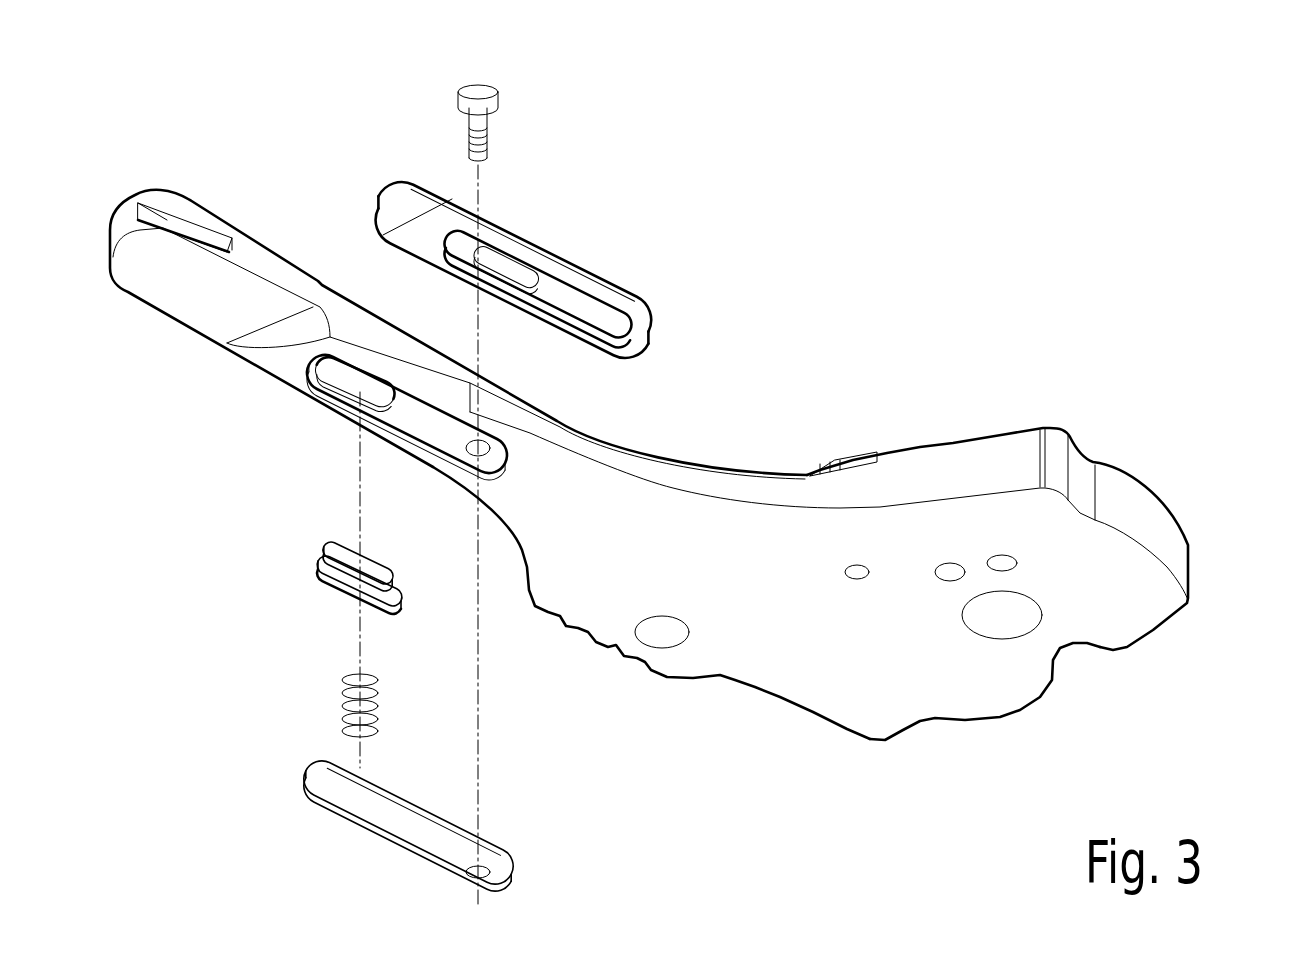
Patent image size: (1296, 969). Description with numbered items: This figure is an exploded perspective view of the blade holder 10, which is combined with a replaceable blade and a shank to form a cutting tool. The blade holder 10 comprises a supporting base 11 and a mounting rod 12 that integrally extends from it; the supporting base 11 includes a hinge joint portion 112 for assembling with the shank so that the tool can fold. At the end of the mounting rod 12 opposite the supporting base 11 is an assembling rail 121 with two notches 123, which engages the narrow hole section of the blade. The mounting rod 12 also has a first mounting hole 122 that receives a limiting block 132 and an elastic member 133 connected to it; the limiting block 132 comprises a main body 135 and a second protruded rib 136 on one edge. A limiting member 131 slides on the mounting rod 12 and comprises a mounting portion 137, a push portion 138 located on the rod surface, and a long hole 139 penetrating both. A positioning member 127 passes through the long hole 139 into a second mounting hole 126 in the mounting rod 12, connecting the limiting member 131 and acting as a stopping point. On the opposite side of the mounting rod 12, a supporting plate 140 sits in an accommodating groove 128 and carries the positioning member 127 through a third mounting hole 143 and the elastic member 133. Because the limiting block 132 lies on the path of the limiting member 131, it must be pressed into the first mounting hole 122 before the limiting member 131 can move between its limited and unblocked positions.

The blade holder 10 is at (1288, 47).
The supporting base 11 is at (930, 478).
The hinge joint portion 112 is at (1012, 668).
The mounting rod 12 is at (291, 265).
The assembling rail 121 is at (228, 119).
The notches 123 is at (110, 218).
The first mounting hole 122 is at (328, 368).
The second mounting hole 126 is at (482, 442).
The positioning member 127 is at (500, 95).
The accommodating groove 128 is at (422, 457).
The limiting member 131 is at (565, 238).
The mounting portion 137 is at (580, 308).
The push portion 138 is at (413, 205).
The long hole 139 is at (523, 285).
The limiting block 132 is at (306, 558).
The main body 135 is at (337, 591).
The second protruded rib 136 is at (322, 578).
The elastic member 133 is at (372, 673).
The supporting plate 140 is at (330, 808).
The third mounting hole 143 is at (482, 866).